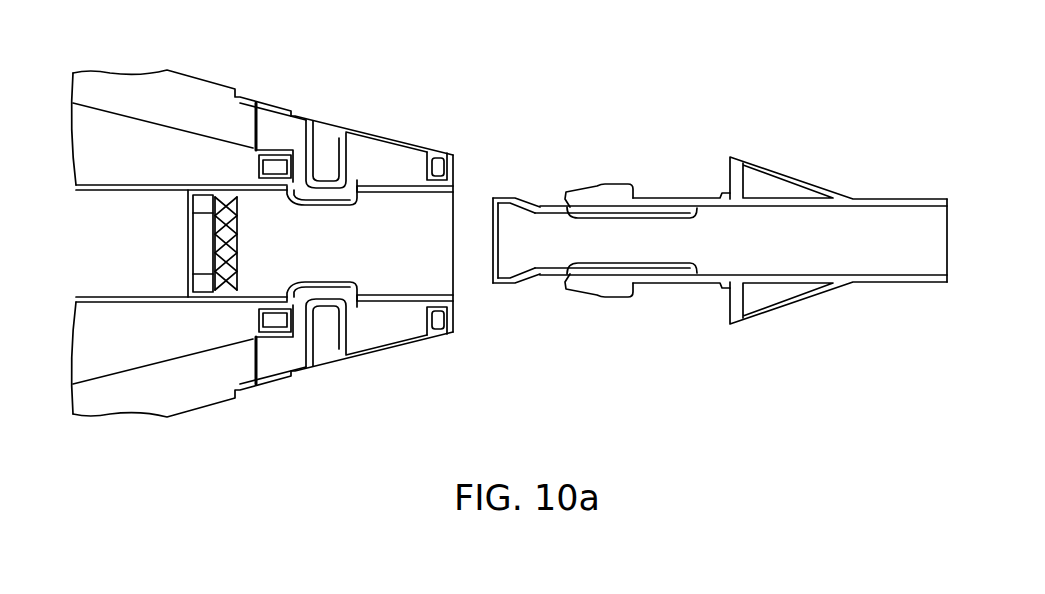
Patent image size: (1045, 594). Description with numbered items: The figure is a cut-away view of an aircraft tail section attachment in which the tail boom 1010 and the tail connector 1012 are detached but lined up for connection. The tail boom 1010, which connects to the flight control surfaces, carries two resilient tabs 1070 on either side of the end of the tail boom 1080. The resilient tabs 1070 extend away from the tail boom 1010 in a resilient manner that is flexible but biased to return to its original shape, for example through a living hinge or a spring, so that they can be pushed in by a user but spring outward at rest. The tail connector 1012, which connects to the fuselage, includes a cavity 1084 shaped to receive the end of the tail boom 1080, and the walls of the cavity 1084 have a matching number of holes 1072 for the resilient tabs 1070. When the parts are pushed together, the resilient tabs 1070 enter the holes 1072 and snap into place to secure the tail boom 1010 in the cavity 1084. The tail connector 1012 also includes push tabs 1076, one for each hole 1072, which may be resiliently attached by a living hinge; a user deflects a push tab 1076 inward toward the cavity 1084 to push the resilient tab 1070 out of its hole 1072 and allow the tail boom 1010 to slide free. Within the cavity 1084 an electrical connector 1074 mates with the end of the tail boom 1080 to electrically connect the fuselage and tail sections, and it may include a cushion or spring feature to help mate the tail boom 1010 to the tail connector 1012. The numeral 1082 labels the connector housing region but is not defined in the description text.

The tail boom 1010 is at (493, 142).
The tail connector 1012 is at (63, 68).
The resilient tabs 1070 is at (599, 200).
The holes 1072 is at (310, 204).
The electrical connector 1074 is at (194, 246).
The push tabs 1076 is at (325, 134).
The end of the tail boom 1080 is at (475, 283).
The receptacle housing 1082 is at (73, 322).
The cavity 1084 is at (354, 243).